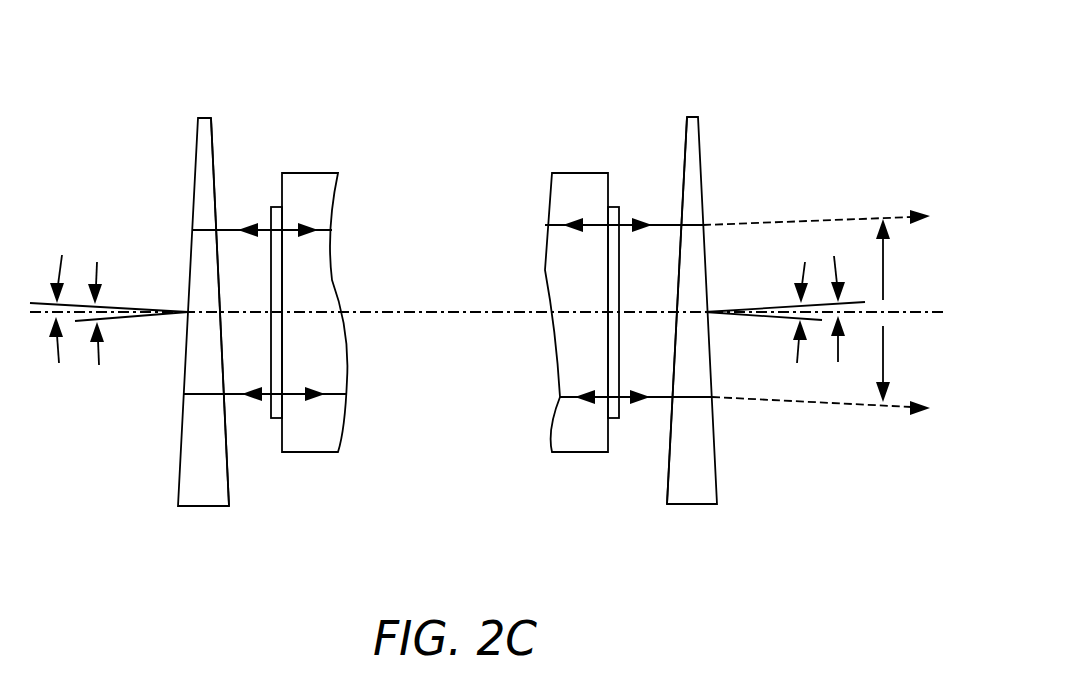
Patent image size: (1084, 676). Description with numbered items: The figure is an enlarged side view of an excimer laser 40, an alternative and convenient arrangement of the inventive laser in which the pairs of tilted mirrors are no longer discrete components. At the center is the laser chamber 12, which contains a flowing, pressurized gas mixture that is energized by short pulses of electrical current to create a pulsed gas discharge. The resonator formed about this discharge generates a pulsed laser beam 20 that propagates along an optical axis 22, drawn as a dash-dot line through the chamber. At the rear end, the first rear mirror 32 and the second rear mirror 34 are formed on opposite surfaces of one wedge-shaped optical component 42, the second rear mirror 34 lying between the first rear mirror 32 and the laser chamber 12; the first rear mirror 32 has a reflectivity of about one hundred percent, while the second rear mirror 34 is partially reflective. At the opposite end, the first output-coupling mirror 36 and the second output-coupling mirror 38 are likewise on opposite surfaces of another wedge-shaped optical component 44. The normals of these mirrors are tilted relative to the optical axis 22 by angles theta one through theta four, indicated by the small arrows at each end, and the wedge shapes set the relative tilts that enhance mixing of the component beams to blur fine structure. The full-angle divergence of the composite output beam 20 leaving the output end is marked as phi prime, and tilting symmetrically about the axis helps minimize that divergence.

The laser chamber 12 is at (325, 177).
The pulsed laser beam 20 is at (793, 217).
The optical axis 22 is at (478, 312).
The first rear mirror 32 is at (178, 462).
The second rear mirror 34 is at (213, 138).
The first output-coupling mirror 36 is at (678, 147).
The second output-coupling mirror 38 is at (718, 463).
The excimer laser 40 is at (815, 68).
The wedge-shaped optical component 42 is at (207, 499).
The wedge-shaped optical component 44 is at (685, 498).